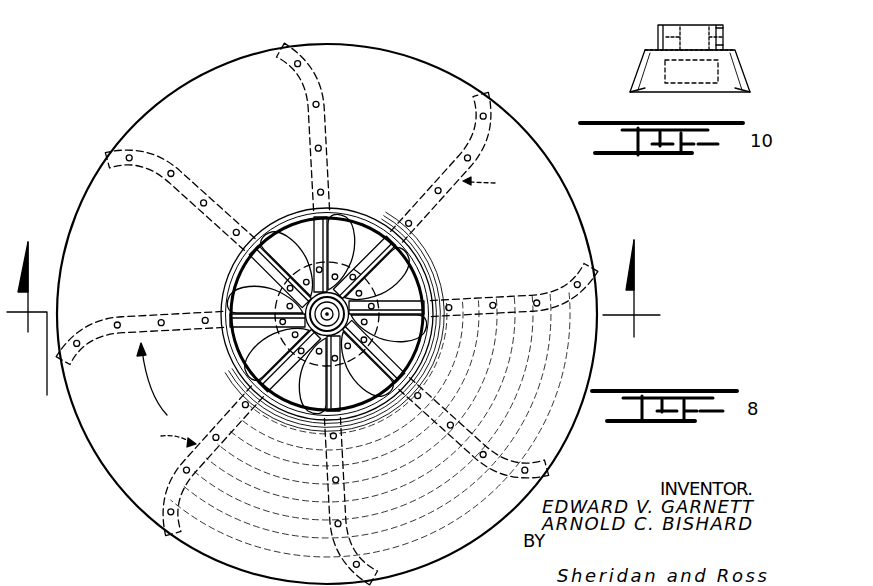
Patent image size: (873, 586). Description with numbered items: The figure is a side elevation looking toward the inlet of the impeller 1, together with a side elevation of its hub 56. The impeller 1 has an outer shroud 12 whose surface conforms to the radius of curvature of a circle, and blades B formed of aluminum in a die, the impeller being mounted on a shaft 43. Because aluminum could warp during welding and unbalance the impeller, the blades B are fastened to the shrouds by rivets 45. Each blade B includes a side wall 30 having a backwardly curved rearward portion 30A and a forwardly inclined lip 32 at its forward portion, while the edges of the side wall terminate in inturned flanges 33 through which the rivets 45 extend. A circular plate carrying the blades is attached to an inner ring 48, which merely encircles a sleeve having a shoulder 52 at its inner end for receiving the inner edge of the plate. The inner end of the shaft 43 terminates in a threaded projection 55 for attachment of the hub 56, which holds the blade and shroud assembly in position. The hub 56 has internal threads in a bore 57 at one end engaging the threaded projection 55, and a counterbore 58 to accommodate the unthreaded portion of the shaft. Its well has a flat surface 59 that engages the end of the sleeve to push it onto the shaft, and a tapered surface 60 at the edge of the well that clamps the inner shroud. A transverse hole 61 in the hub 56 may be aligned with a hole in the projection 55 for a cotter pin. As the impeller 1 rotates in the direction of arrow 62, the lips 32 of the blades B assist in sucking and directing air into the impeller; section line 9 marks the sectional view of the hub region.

In FIG. 8, the impeller 1 is at (580, 215).
In FIG. 8, the outer shroud 12 is at (292, 213).
In FIG. 8, the section line 9- 9 is at (333, 317).
In FIG. 8, the side wall 30 is at (549, 305).
In FIG. 8, the rearward portion of side wall 30A is at (318, 80).
In FIG. 8, the lip 32 is at (347, 213).
In FIG. 8, the inturned flange 33 is at (210, 212).
In FIG. 8, the shaft 43 is at (303, 0).
In FIG. 8, the rivets 45 is at (439, 189).
In FIG. 8, the inner ring 48 is at (376, 286).
In FIG. 8, the shoulder 52 is at (350, 0).
In FIG. 8, the threaded projection 55 is at (332, 318).
In FIG. 8, the hub 56 is at (300, 318).
In FIG. 10, the hub 56 is at (737, 67).
In FIG. 10, the bore 57 is at (680, 33).
In FIG. 10, the counterbore 58 is at (665, 63).
In FIG. 10, the flat surface 59 is at (717, 93).
In FIG. 10, the tapered surface 60 is at (645, 88).
In FIG. 10, the transverse hole 61 is at (724, 36).
In FIG. 8, the arrow 62 is at (157, 393).
In FIG. 8, the blades B is at (328, 310).